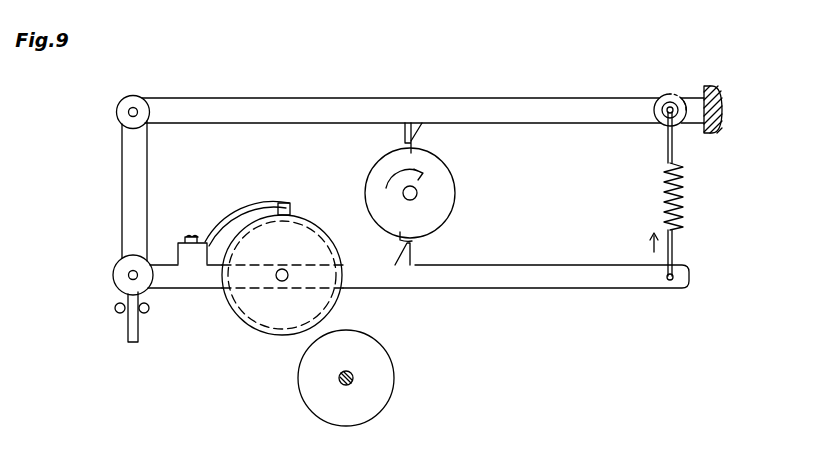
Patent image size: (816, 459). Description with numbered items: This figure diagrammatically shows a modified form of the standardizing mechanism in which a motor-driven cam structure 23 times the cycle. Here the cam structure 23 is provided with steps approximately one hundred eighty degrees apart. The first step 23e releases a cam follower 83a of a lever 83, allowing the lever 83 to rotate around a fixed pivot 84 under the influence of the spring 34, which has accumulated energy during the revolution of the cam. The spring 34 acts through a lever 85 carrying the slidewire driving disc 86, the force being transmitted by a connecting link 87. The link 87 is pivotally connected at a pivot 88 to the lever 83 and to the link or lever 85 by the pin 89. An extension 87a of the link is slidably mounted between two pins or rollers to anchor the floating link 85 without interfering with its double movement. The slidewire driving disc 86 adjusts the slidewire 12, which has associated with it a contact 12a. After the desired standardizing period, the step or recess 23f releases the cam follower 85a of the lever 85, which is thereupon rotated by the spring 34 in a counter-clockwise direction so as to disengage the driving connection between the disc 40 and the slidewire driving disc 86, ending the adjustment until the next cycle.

The slidewire 12 is at (227, 300).
The contact 12a is at (230, 223).
The cam structure 23 is at (447, 188).
The step 23e is at (414, 147).
The step or recess 23f is at (400, 235).
The spring 34 is at (664, 210).
The disc 40 is at (389, 366).
The lever 83 is at (305, 99).
The cam follower 83a is at (405, 136).
The fixed pivot 84 is at (664, 100).
The lever 85 is at (510, 282).
The cam follower 85a is at (414, 250).
The slidewire driving disc 86 is at (253, 333).
The connecting link 87 is at (127, 168).
The extension 87a is at (128, 333).
The pivot 88 is at (131, 111).
The pin 89 is at (130, 276).